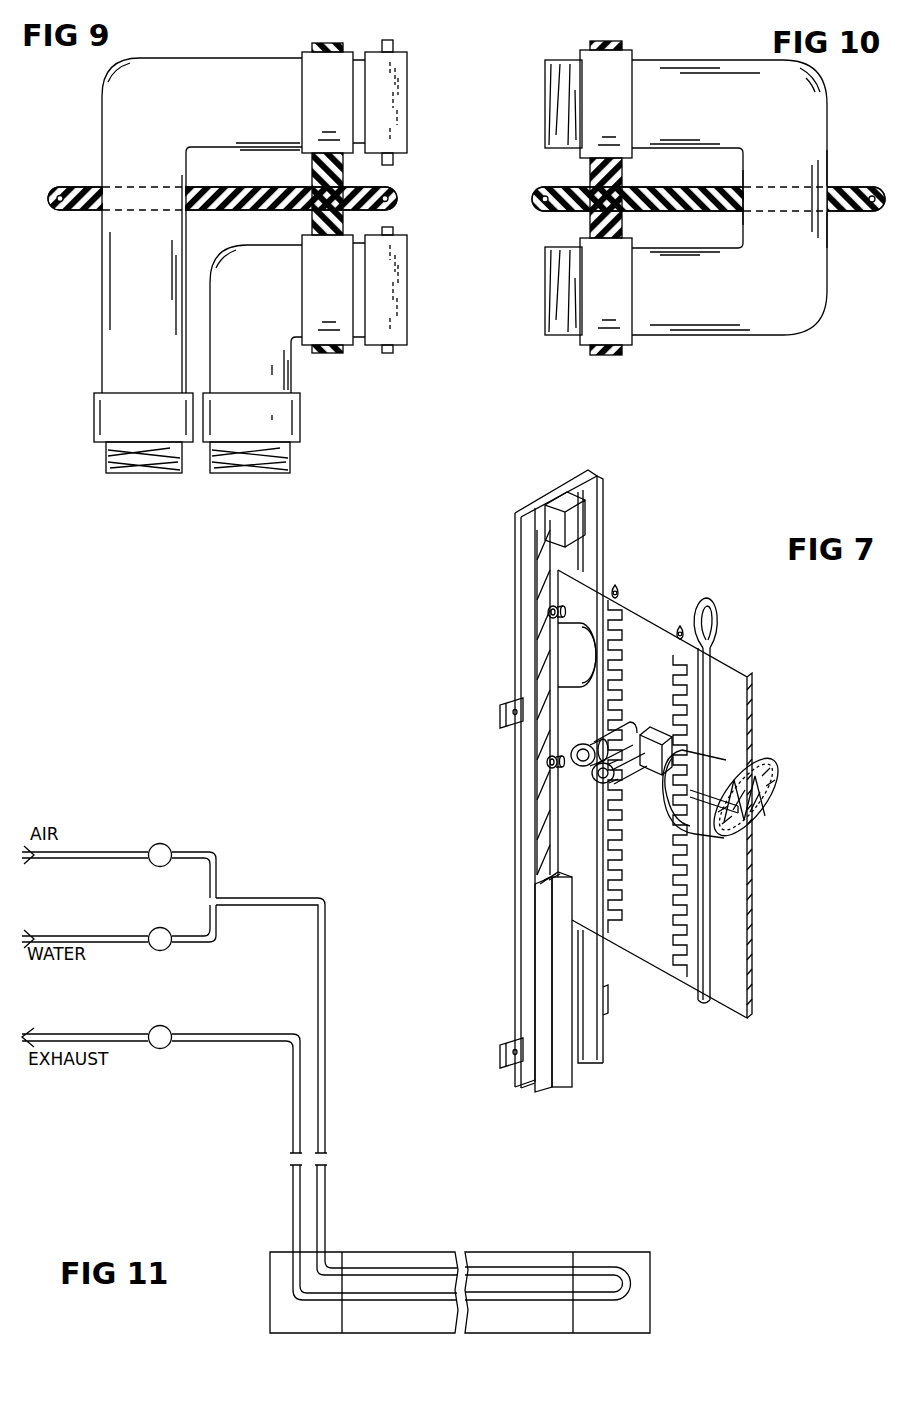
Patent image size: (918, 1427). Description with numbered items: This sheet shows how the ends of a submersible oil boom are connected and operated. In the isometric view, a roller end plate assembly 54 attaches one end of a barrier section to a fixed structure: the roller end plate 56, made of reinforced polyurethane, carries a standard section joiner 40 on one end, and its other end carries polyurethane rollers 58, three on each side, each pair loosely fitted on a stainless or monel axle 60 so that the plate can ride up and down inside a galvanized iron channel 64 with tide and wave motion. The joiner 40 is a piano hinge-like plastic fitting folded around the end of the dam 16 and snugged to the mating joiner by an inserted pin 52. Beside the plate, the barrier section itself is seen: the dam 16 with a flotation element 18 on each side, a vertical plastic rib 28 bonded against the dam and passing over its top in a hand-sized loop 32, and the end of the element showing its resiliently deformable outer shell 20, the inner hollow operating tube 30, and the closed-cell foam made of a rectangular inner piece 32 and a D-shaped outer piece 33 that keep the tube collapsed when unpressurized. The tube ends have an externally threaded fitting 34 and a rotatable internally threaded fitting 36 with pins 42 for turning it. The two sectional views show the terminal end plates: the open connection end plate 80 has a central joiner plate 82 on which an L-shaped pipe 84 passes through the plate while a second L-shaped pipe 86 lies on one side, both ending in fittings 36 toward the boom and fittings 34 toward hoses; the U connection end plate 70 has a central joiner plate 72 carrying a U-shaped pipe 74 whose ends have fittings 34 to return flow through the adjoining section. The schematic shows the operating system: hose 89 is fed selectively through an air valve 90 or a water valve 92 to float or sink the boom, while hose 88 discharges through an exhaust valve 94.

In FIG. 7, the dam 16 is at (753, 687).
In FIG. 11, the dam 16 is at (533, 1337).
In FIG. 7, the flotation element 18 is at (782, 755).
In FIG. 7, the outer shell 20 is at (720, 783).
In FIG. 7, the vertical plastic rib 28 is at (710, 932).
In FIG. 7, the inner hollow operating tube 30 is at (784, 766).
In FIG. 11, the inner hollow operating tube 30 is at (493, 1293).
In FIG. 7, the rectangular inner foam piece 32 is at (720, 610).
In FIG. 7, the D-shaped outer foam piece 33 is at (775, 782).
In FIG. 9, the externally threaded fitting 34 is at (108, 452).
In FIG. 10, the externally threaded fitting 34 is at (545, 85).
In FIG. 7, the externally threaded fitting 34 is at (600, 786).
In FIG. 9, the internally threaded rotatable fitting 36 is at (412, 76).
In FIG. 7, the internally threaded rotatable fitting 36 is at (650, 778).
In FIG. 9, the joiner 40 is at (78, 211).
In FIG. 10, the joiner 40 is at (548, 211).
In FIG. 7, the joiner 40 is at (600, 922).
In FIG. 9, the pin 42 is at (384, 40).
In FIG. 9, the pin 52 is at (60, 187).
In FIG. 10, the pin 52 is at (884, 180).
In FIG. 7, the pin 52 is at (616, 586).
In FIG. 7, the roller end plate assembly 54 is at (655, 510).
In FIG. 7, the roller end plate 56 is at (588, 572).
In FIG. 7, the roller 58 is at (556, 607).
In FIG. 7, the axle 60 is at (550, 613).
In FIG. 7, the channel 64 is at (593, 503).
In FIG. 10, the U connection end plate 70 is at (838, 185).
In FIG. 11, the U connection end plate 70 is at (653, 1303).
In FIG. 10, the central joiner plate 72 is at (703, 187).
In FIG. 10, the U-shaped pipe 74 is at (785, 328).
In FIG. 11, the U-shaped pipe 74 is at (595, 1270).
In FIG. 9, the open connection end plate 80 is at (78, 178).
In FIG. 7, the open connection end plate 80 is at (662, 614).
In FIG. 11, the open connection end plate 80 is at (268, 1310).
In FIG. 9, the central joiner plate 82 is at (240, 186).
In FIG. 7, the central joiner plate 82 is at (633, 630).
In FIG. 9, the L-shaped pipe 84 is at (104, 313).
In FIG. 7, the L-shaped pipe 84 is at (625, 723).
In FIG. 11, the L-shaped pipe 84 is at (292, 1274).
In FIG. 9, the L-shaped pipe 86 is at (292, 372).
In FIG. 7, the L-shaped pipe 86 is at (637, 750).
In FIG. 11, the L-shaped pipe 86 is at (323, 1252).
In FIG. 11, the hose 88 is at (292, 1122).
In FIG. 11, the hose 89 is at (325, 1122).
In FIG. 11, the air valve 90 is at (166, 844).
In FIG. 11, the water valve 92 is at (167, 928).
In FIG. 11, the exhaust valve 94 is at (168, 1026).